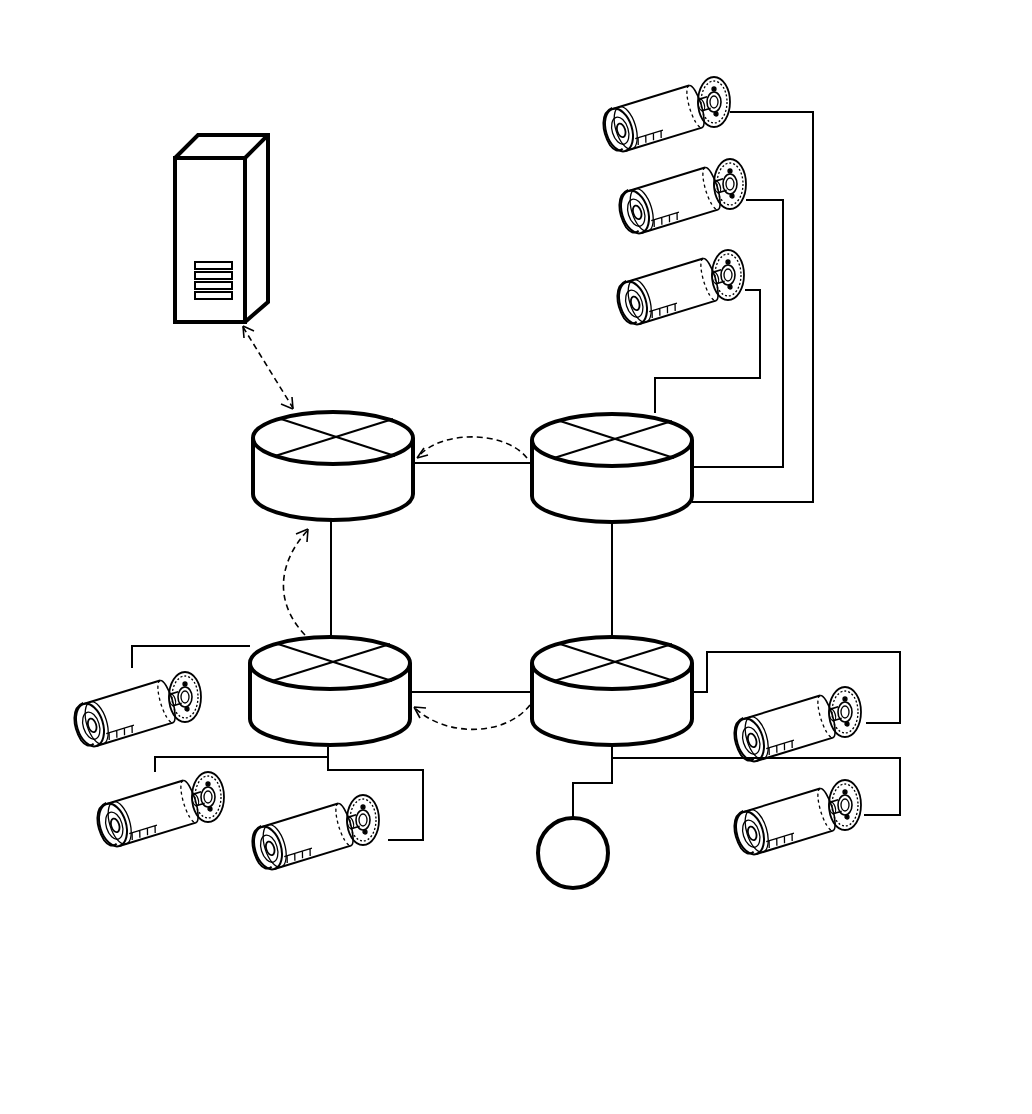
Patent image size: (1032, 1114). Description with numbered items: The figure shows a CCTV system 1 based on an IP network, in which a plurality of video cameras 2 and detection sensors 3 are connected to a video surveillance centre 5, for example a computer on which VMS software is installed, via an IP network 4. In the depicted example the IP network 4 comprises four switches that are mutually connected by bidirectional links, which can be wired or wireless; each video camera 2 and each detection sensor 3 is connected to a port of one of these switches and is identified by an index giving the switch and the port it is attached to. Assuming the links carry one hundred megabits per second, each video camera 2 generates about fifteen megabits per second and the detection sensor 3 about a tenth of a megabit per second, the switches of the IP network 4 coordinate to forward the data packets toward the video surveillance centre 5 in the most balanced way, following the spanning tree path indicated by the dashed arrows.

The CCTV system 1 is at (422, 159).
The video camera 2 is at (650, 88).
The detection sensor 3 is at (556, 862).
The IP network 4 is at (196, 557).
The video surveillance centre 5 is at (188, 232).